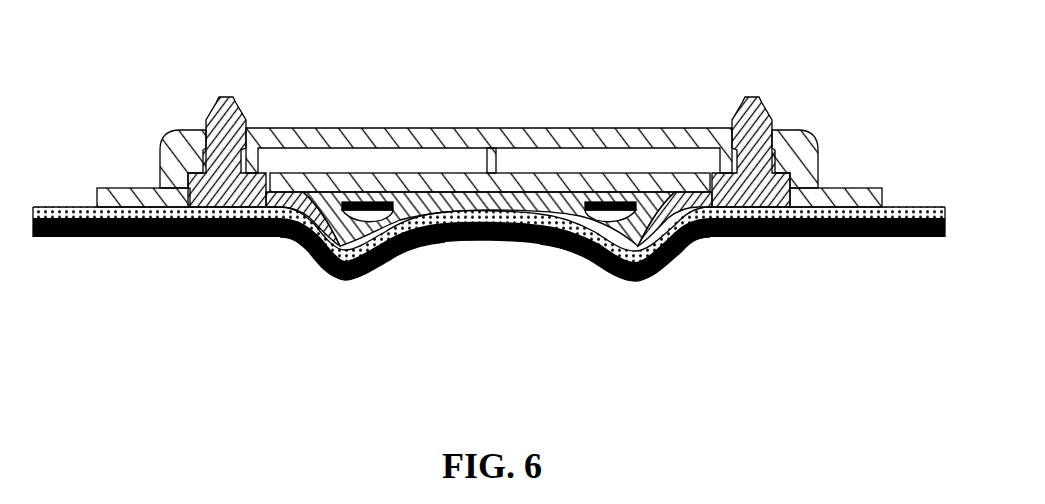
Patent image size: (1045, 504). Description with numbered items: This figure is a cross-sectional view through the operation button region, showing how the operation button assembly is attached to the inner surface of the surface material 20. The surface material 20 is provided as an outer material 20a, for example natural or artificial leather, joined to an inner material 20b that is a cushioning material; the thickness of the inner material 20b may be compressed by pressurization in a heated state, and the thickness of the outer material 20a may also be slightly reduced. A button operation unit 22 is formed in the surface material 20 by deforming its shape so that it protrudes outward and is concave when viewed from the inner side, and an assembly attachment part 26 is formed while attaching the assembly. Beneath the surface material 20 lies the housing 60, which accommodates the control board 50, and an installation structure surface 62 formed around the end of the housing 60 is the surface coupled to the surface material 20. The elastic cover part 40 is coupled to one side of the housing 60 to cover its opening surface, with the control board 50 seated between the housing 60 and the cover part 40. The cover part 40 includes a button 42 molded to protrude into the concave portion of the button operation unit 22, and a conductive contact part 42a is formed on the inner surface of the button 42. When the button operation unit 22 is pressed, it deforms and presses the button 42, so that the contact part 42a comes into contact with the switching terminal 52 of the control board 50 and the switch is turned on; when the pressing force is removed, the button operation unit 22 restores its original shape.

The surface material 20 is at (489, 301).
The outer material 20a is at (868, 342).
The inner material 20b is at (922, 213).
The button operation unit 22 is at (340, 276).
The assembly attachment part 26 is at (140, 244).
The cover part 40 is at (433, 213).
The button 42 is at (320, 257).
The conductive contact part 42a is at (388, 205).
The control board 50 is at (430, 167).
The switching terminal 52 is at (380, 175).
The housing 60 is at (570, 125).
The installation structure surface 62 is at (120, 198).